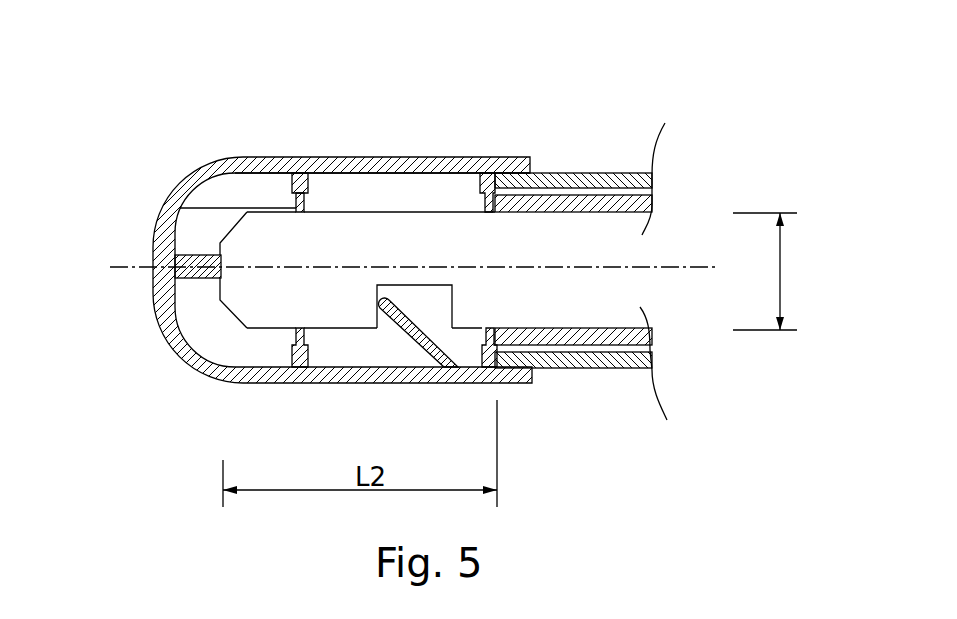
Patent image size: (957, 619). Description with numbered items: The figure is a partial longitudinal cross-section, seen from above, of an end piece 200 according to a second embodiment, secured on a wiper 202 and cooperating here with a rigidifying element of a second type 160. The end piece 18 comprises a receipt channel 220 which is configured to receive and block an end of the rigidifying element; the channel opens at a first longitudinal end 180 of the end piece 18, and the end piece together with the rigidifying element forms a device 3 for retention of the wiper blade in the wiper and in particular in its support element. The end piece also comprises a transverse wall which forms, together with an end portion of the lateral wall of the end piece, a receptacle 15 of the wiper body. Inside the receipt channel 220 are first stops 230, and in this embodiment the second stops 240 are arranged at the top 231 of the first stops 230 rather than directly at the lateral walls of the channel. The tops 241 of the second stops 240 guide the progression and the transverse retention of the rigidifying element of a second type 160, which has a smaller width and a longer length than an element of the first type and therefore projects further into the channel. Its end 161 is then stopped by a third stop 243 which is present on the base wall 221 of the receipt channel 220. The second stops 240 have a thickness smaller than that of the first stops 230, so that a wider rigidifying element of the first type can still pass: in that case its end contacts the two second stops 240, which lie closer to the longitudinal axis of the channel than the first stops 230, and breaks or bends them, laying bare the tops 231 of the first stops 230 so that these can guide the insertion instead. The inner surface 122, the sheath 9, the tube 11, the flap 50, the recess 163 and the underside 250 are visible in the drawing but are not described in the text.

The device for retention of the wiper blade 3 is at (505, 98).
The sheath 9 is at (586, 173).
The tube 11 is at (654, 205).
The receptacle 15 is at (480, 205).
The end piece 18 is at (308, 230).
The flap valve 50 is at (444, 372).
The inner surface 122 is at (360, 174).
The rigidifying element of a second type 160 is at (640, 275).
The end of the rigidifying element of a second type 161 is at (457, 258).
The recess 163 is at (408, 296).
The first longitudinal end 180 is at (542, 386).
The end piece 200 is at (168, 174).
The wiper 202 is at (655, 95).
The receipt channel 220 is at (287, 360).
The base wall 221 is at (187, 305).
The first stops 230 is at (308, 176).
The top of the first stops 231 is at (307, 193).
The second stops 240 is at (180, 208).
The tops of the second stops 241 is at (302, 213).
The third stop 243 is at (200, 270).
The flap underside 250 is at (412, 336).